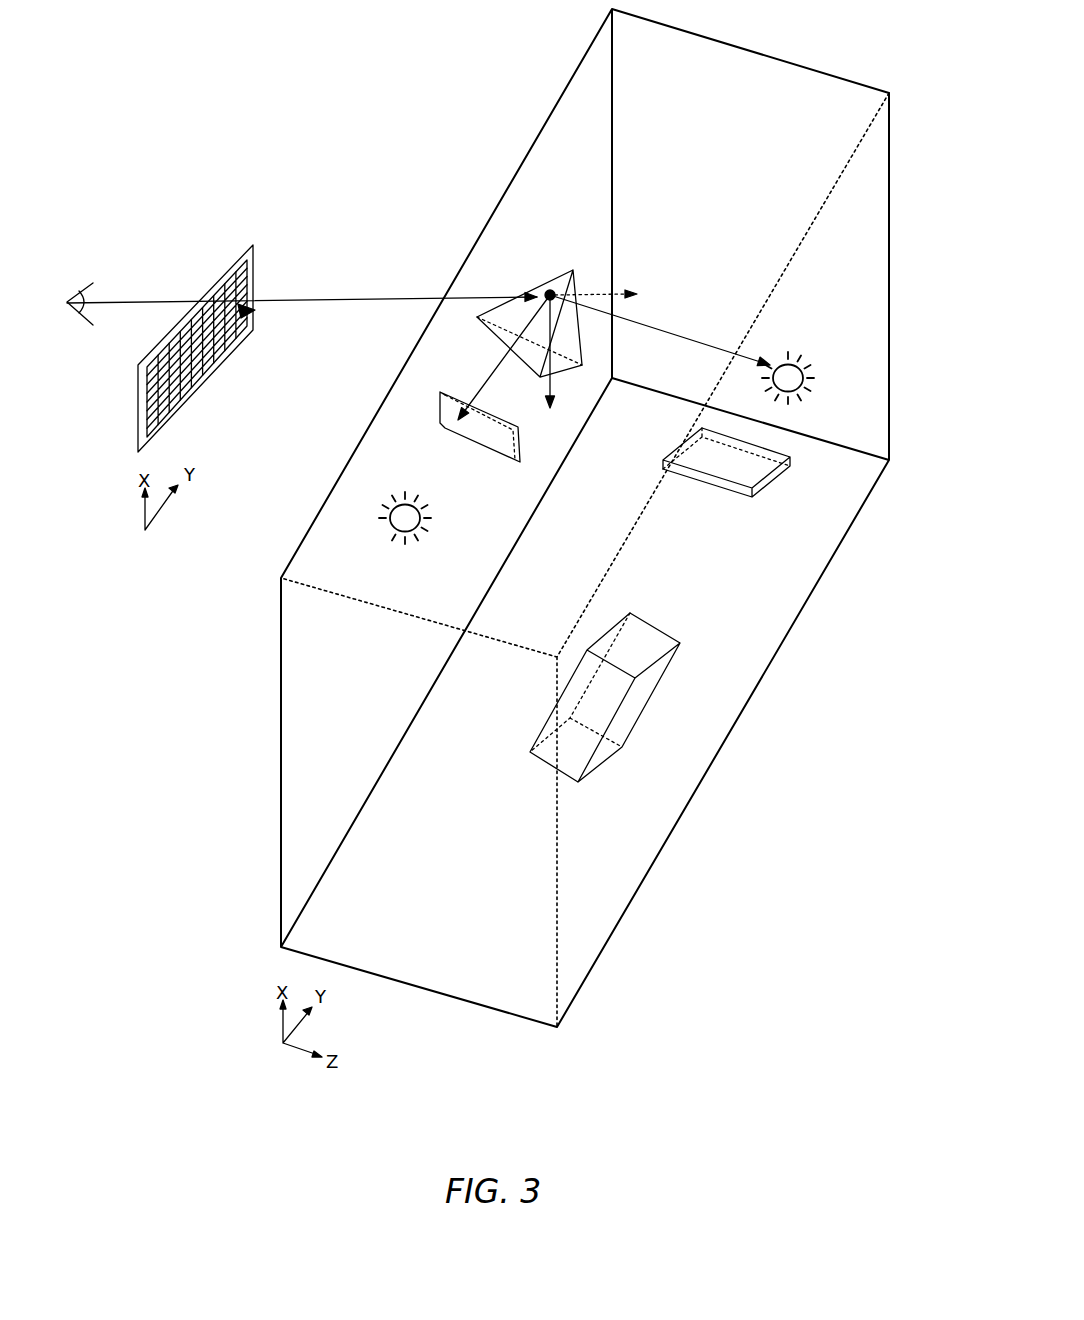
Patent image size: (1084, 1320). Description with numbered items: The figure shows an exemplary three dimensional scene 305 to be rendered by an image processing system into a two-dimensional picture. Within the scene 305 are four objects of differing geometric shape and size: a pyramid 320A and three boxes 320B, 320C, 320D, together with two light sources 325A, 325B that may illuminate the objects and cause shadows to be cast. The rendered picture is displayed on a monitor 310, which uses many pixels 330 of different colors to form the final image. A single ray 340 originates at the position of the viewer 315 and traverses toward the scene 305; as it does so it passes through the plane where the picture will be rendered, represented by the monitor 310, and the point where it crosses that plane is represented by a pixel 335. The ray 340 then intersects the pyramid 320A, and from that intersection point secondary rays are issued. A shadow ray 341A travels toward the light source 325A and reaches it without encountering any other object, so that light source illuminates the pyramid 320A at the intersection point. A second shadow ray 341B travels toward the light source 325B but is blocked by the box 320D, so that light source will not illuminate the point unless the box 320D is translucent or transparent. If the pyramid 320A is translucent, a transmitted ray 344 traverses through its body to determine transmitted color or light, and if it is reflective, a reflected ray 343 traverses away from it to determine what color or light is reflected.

The three dimensional scene 305 is at (522, 1047).
The monitor 310 is at (253, 275).
The viewer 315 is at (77, 287).
The pyramid 320A is at (556, 271).
The box 320B is at (712, 493).
The box 320C is at (530, 752).
The box 320D is at (478, 448).
The light source 325A is at (798, 362).
The light source 325B is at (388, 530).
The pixels 330 is at (140, 420).
The pixel 335 is at (252, 318).
The ray 340 is at (372, 296).
The shadow ray 341A is at (653, 330).
The shadow ray 341B is at (498, 362).
The reflected ray 343 is at (553, 393).
The transmitted ray 344 is at (619, 291).